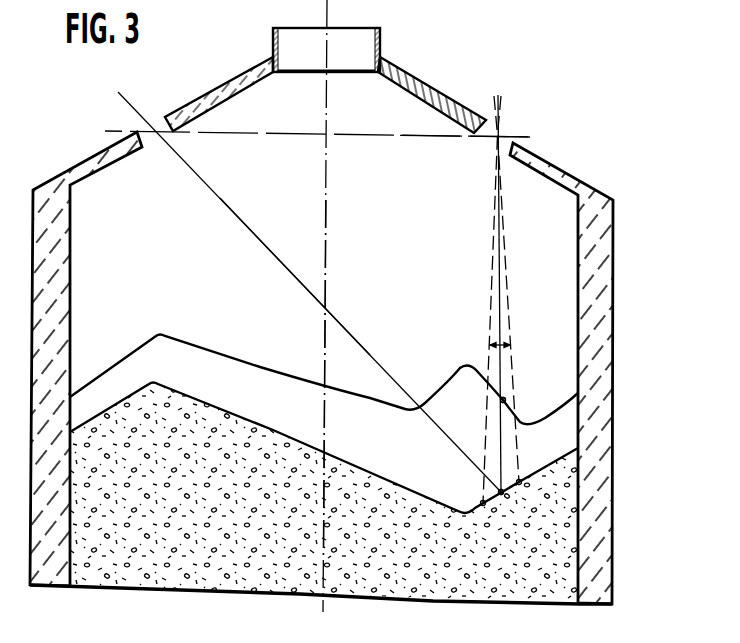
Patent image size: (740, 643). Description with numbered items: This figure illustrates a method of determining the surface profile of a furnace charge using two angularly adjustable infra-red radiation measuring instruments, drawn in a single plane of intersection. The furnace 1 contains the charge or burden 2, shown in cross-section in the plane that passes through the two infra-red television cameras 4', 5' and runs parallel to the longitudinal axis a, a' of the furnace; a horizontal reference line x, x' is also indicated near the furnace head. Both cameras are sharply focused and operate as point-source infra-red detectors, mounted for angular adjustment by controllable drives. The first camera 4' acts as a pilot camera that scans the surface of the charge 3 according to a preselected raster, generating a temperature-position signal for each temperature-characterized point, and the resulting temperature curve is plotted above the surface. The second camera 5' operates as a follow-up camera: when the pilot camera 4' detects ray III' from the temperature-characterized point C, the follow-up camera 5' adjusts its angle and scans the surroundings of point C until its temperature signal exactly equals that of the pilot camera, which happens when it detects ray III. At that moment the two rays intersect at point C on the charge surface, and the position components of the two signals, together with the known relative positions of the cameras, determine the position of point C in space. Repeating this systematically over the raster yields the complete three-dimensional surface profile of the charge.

The furnace 1 is at (619, 359).
The charge or burden 2 is at (267, 573).
The surface of the burden 3 is at (250, 422).
The first infra-red television camera 4' is at (309, 283).
The second infra-red television camera 5' is at (503, 299).
The ray III is at (512, 302).
The ray III' is at (295, 276).
The temperature-characterized point C is at (499, 491).
The longitudinal axis end a is at (324, 306).
The longitudinal axis end a' is at (321, 419).
The reference plane x-x' x is at (421, 123).
The reference plane x- x' is at (316, 119).